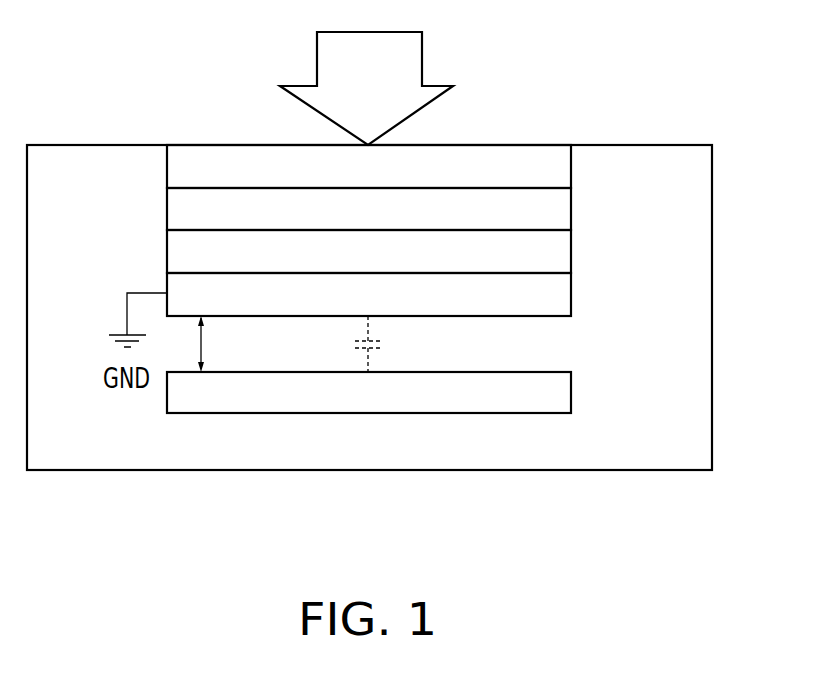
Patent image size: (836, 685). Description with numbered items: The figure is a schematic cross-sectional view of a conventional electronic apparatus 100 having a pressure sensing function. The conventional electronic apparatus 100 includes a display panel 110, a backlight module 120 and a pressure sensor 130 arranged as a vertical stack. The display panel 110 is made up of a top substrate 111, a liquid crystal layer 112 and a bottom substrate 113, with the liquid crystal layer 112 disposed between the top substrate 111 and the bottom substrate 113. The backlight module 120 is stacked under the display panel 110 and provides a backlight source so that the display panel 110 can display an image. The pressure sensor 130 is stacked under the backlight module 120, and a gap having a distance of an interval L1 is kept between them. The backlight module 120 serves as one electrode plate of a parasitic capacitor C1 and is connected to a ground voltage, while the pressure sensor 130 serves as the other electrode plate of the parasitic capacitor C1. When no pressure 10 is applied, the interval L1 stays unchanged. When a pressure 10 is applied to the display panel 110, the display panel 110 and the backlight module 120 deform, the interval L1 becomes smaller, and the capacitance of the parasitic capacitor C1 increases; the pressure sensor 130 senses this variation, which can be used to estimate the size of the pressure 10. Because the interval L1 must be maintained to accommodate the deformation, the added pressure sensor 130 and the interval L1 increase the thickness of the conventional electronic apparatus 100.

The pressure 10 is at (422, 58).
The conventional electronic apparatus 100 is at (712, 175).
The display panel 110 is at (432, 209).
The top substrate 111 is at (571, 168).
The liquid crystal layer 112 is at (571, 210).
The bottom substrate 113 is at (399, 251).
The backlight module 120 is at (571, 293).
The pressure sensor 130 is at (571, 393).
The interval L1 is at (217, 344).
The parasitic capacitor C1 is at (385, 343).